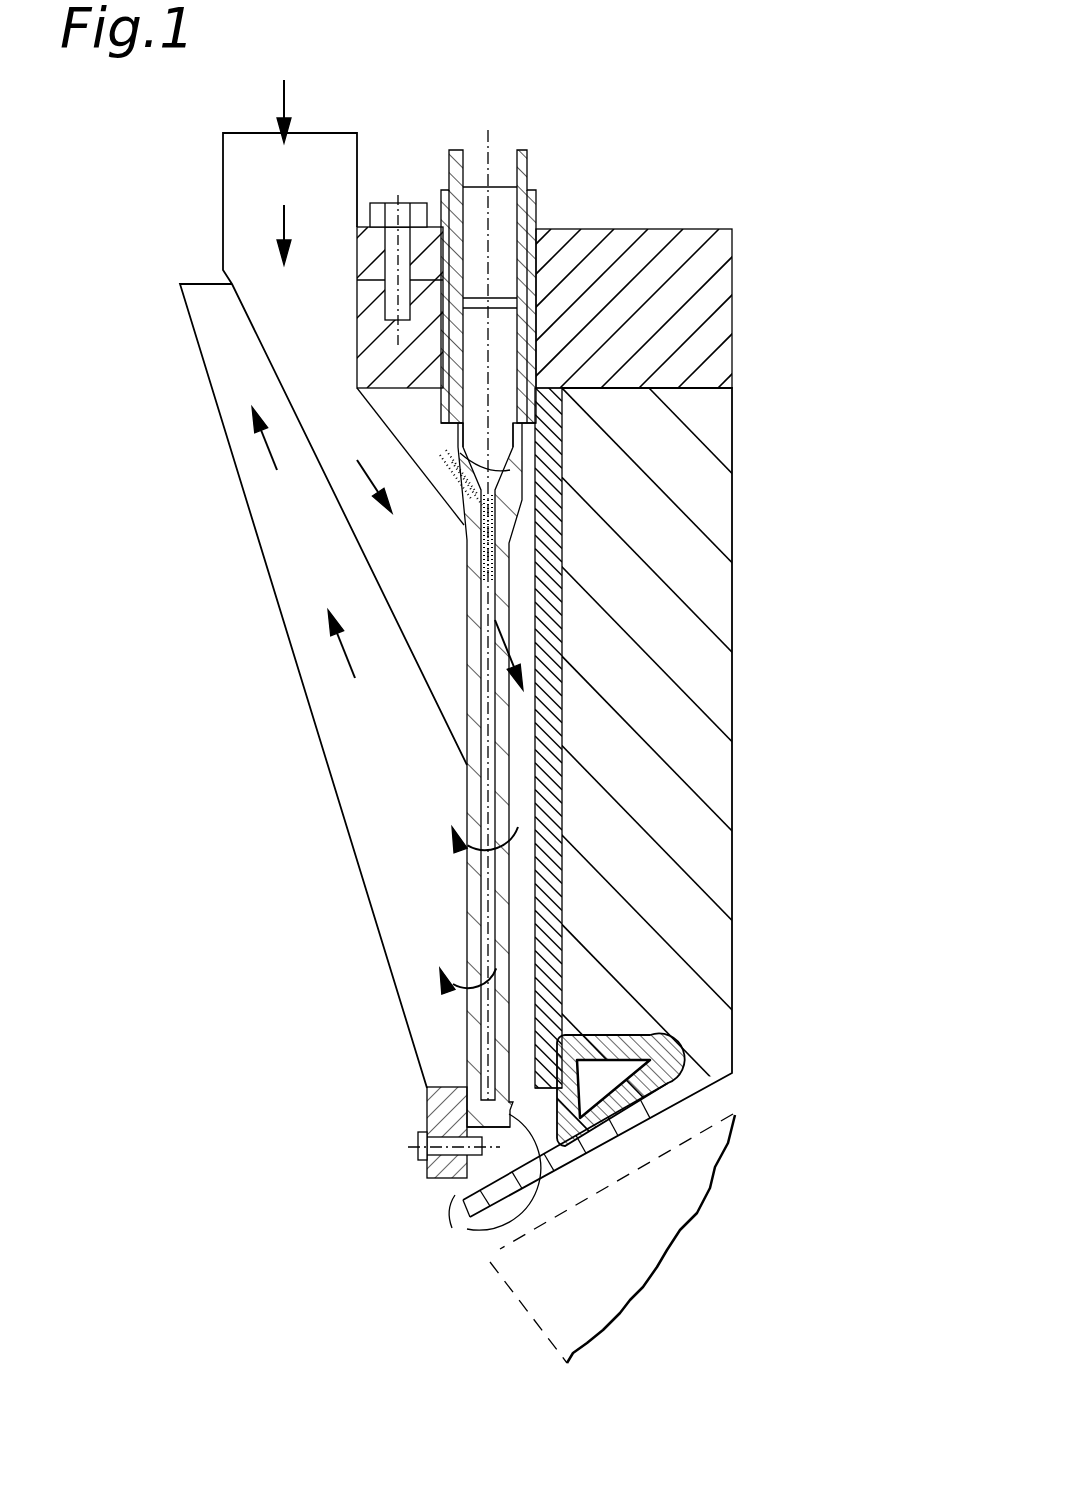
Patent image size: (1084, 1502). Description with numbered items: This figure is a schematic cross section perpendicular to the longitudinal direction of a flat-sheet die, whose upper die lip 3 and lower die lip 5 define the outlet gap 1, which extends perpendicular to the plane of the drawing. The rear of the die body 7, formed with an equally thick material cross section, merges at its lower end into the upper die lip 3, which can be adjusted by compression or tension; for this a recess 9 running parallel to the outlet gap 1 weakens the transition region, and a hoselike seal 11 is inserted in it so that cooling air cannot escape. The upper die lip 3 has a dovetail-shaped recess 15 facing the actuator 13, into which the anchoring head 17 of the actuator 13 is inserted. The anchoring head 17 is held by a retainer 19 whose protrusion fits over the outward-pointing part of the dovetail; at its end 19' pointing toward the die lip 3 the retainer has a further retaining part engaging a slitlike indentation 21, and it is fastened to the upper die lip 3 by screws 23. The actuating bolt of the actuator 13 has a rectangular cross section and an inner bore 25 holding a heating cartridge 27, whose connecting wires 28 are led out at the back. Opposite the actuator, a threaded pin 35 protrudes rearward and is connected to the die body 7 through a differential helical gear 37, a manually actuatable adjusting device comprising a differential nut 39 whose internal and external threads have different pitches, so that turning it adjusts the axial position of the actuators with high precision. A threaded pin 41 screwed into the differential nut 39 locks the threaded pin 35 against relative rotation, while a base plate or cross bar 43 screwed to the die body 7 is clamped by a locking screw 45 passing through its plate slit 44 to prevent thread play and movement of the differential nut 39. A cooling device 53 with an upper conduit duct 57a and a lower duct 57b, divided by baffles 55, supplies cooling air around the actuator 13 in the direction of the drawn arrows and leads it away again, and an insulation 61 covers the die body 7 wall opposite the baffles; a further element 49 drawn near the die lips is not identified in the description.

The outlet gap 1 is at (488, 1243).
The upper die lip 3 is at (275, 910).
The lower die lip 5 is at (648, 1252).
The die body 7 is at (705, 590).
The recess 9 is at (637, 1073).
The hoselike seal 11 is at (570, 1058).
The actuator 13 is at (500, 760).
The recess 15 is at (485, 1235).
The anchoring head 17 is at (430, 1105).
The retainer 19 is at (397, 1132).
The end of retainer 19' is at (616, 1189).
The slitlike indentation 21 is at (545, 1180).
The screws 23 is at (415, 1150).
The bore 25 is at (483, 909).
The heating cartridge 27 is at (490, 798).
The connecting wires 28 is at (458, 488).
The threaded pin 35 is at (503, 352).
The differential helical gear 37 is at (591, 211).
The differential nut 39 is at (535, 197).
The threaded pin 41 is at (491, 203).
The base plate or cross bar 43 is at (720, 255).
The plate slit 44 is at (377, 280).
The locking screw 45 is at (397, 213).
The roller 49 is at (455, 1185).
The cooling device 53 is at (345, 705).
The baffles 55 is at (437, 503).
The upper conduit duct 57a is at (330, 325).
The lower duct 57b is at (423, 753).
The insulation 61 is at (553, 1012).